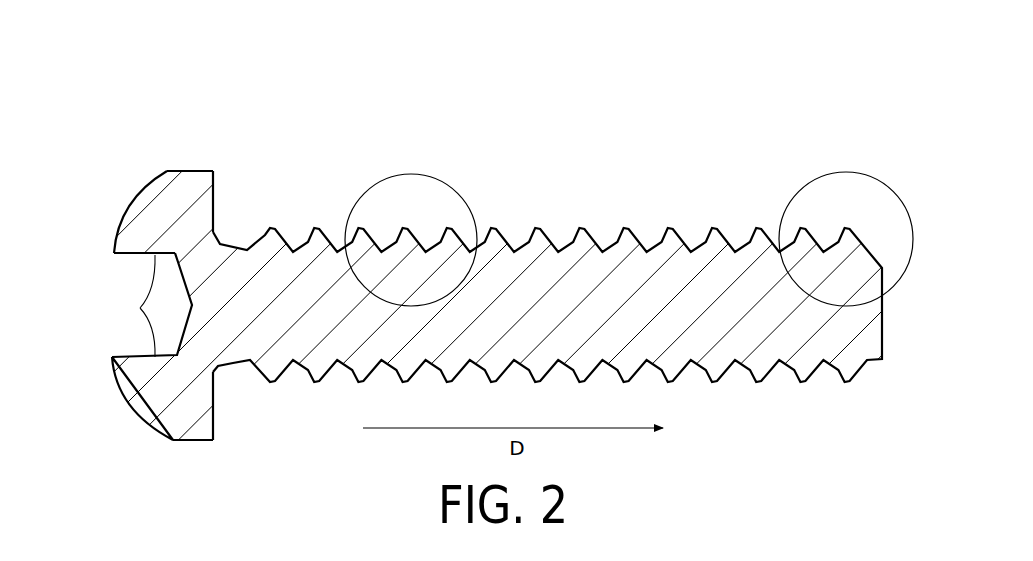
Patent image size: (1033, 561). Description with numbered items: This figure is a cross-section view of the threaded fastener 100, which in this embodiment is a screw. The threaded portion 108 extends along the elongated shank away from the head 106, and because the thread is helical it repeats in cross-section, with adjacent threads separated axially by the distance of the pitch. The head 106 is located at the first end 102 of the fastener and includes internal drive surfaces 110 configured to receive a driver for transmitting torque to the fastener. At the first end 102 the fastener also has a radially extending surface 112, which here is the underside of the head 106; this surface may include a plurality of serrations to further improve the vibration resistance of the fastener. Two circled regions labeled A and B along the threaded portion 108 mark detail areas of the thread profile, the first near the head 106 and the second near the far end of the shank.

The threaded fastener 100 is at (467, 295).
The first end 102 is at (172, 295).
The head 106 is at (183, 171).
The threaded portion 108 is at (517, 307).
The internal drive surfaces 110 is at (139, 308).
The radially extending surface 112 is at (214, 188).
The detail region A is at (438, 173).
The detail region B is at (873, 173).